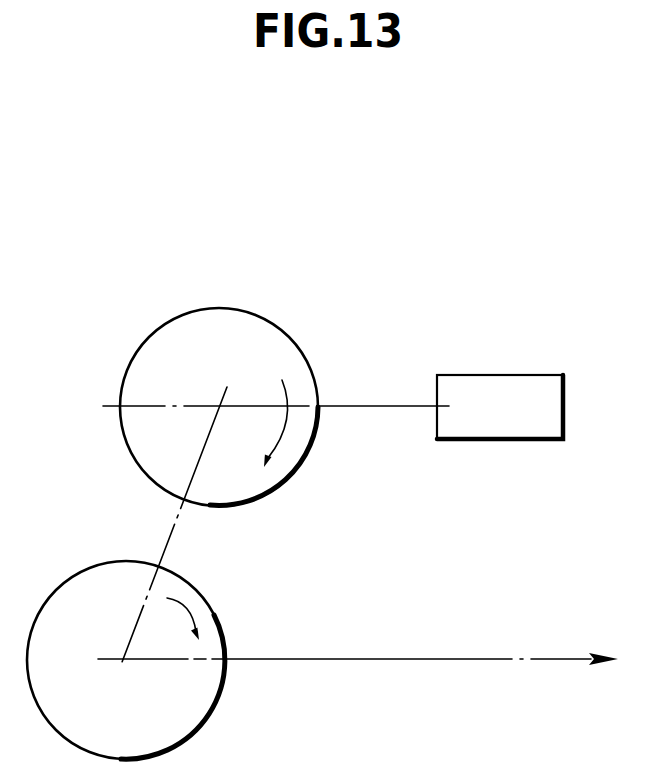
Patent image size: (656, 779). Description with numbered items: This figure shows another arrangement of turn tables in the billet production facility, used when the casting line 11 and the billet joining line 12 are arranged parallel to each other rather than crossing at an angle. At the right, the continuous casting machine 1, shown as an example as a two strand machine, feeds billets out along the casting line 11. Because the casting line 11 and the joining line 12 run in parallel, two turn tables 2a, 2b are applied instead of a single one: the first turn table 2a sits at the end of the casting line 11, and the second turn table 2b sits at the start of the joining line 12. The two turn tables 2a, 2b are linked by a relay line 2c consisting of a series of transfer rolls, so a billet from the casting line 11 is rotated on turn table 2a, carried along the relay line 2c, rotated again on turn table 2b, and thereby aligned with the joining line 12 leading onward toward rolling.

The continuous casting machine 1 is at (500, 380).
The casting line 11 is at (383, 407).
The billet joining line 12 is at (302, 662).
The turn table 2a is at (270, 320).
The turn table 2b is at (217, 613).
The relay line 2c is at (172, 538).